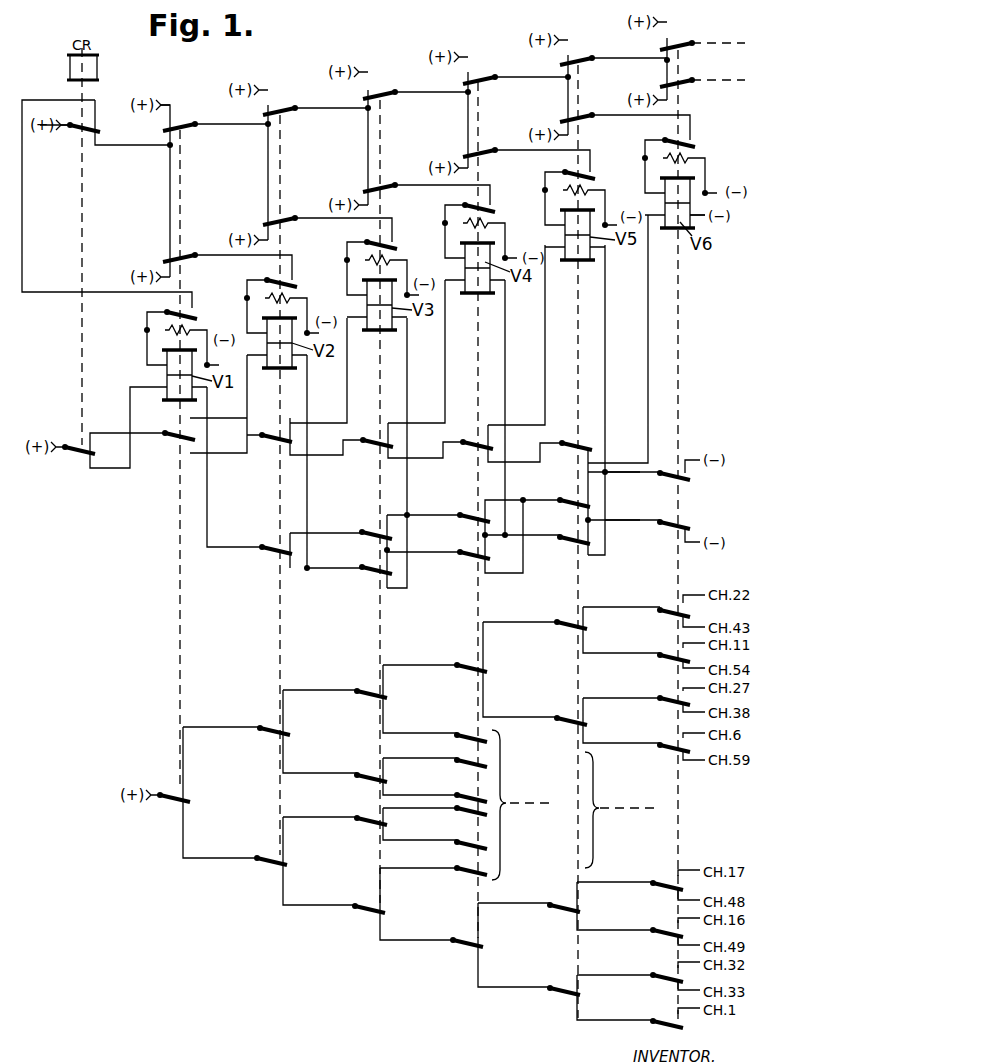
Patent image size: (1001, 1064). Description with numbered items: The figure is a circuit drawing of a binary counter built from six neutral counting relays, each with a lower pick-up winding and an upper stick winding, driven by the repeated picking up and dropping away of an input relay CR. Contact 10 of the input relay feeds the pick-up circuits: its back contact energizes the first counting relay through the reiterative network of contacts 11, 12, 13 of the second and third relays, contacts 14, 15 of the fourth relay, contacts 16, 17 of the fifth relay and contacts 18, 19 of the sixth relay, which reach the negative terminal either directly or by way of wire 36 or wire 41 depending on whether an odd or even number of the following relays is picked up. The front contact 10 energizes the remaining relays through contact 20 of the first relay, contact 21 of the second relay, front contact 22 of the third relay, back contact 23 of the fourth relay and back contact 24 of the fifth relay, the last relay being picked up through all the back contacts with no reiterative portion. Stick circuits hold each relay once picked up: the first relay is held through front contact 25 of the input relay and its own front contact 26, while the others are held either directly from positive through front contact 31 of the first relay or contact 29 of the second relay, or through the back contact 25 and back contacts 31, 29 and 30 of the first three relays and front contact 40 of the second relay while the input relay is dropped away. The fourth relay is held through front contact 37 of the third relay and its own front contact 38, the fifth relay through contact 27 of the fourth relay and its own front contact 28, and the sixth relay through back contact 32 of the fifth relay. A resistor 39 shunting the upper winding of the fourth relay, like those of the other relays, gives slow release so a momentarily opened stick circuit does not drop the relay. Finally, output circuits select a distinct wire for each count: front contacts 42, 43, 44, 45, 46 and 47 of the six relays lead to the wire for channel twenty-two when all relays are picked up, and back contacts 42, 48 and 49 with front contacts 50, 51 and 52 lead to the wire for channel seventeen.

The contact of input relay CR 10 is at (80, 452).
The contact of relay V2 11 is at (270, 554).
The front contact of relay V3 12 is at (372, 530).
The contact of relay V3 13 is at (370, 573).
The contact of relay V4 14 is at (472, 518).
The back contact of relay V4 15 is at (470, 558).
The contact of relay V5 16 is at (572, 503).
The back contact of relay V5 17 is at (570, 543).
The front contact of relay V6 18 is at (688, 480).
The back contact of relay V6 19 is at (686, 524).
The contact of relay V1 20 is at (176, 438).
The contact of relay V2 21 is at (278, 441).
The front contact of relay V3 22 is at (378, 444).
The back contact of relay V4 23 is at (478, 446).
The back contact of relay V5 24 is at (578, 447).
The contact of input relay CR 25 is at (76, 136).
The front contact of relay V1 26 is at (200, 312).
The contact of relay V4 27 is at (483, 155).
The front contact of relay V5 28 is at (593, 177).
The contact of relay V2 29 is at (278, 110).
The back contact of relay V3 30 is at (383, 98).
The contact of relay V1 31 is at (190, 131).
The back contact of relay V5 32 is at (582, 119).
The wire 36 is at (630, 522).
The front contact of relay V3 37 is at (383, 186).
The front contact of relay V4 38 is at (492, 210).
The resistor 39 is at (488, 227).
The front contact of relay V2 40 is at (280, 222).
The wire 41 is at (627, 474).
The contact of relay V1 42 is at (168, 801).
The front contact of relay V2 43 is at (272, 735).
The front contact of relay V3 44 is at (369, 697).
The front contact of relay V4 45 is at (468, 670).
The front contact of relay V5 46 is at (568, 628).
The front contact of relay V6 47 is at (668, 614).
The back contact of relay V2 48 is at (269, 865).
The back contact of relay V3 49 is at (367, 912).
The front contact of relay V4 50 is at (465, 947).
The front contact of relay V5 51 is at (562, 912).
The front contact of relay V6 52 is at (664, 889).